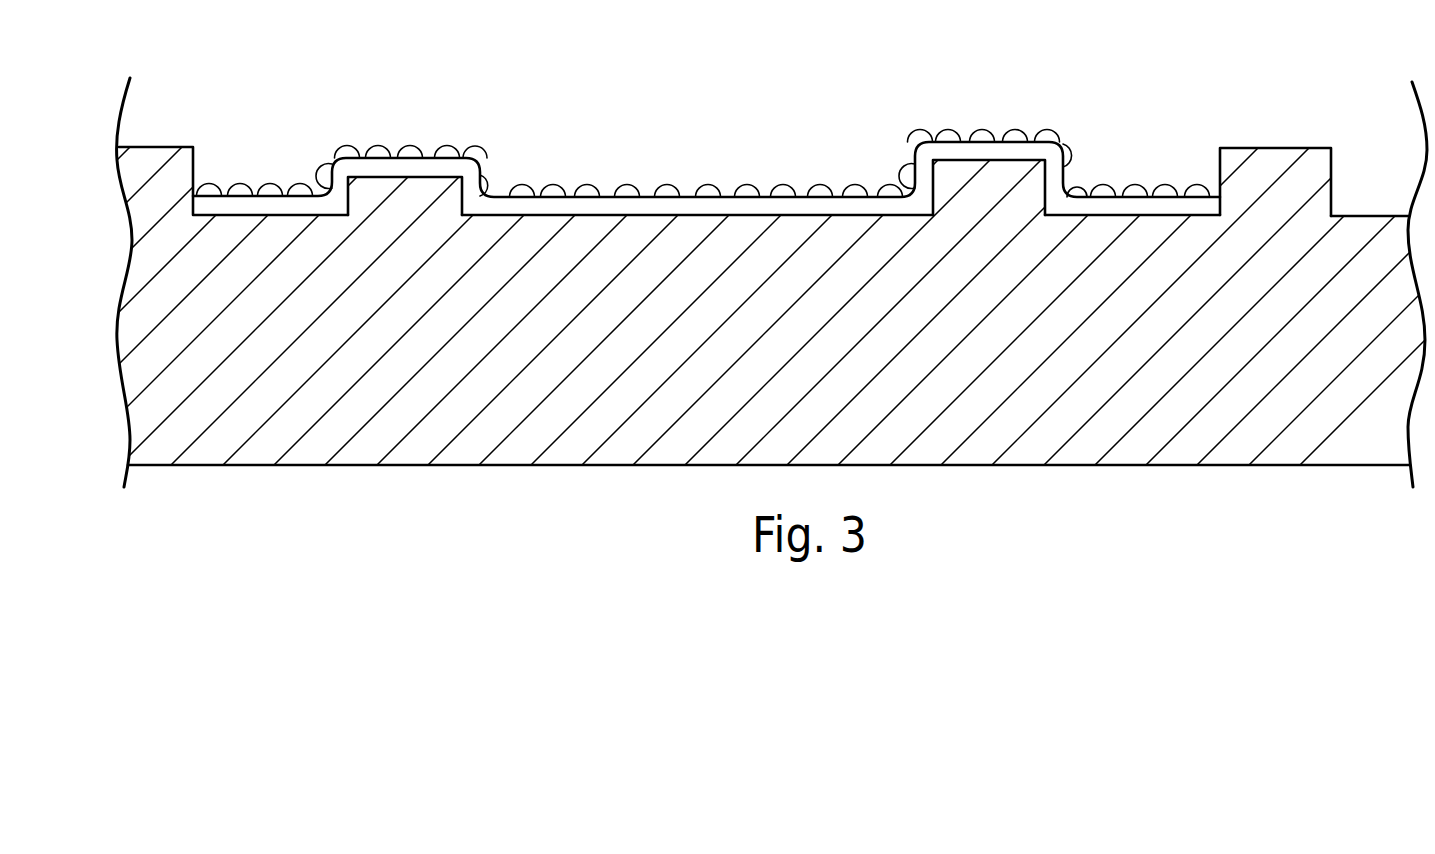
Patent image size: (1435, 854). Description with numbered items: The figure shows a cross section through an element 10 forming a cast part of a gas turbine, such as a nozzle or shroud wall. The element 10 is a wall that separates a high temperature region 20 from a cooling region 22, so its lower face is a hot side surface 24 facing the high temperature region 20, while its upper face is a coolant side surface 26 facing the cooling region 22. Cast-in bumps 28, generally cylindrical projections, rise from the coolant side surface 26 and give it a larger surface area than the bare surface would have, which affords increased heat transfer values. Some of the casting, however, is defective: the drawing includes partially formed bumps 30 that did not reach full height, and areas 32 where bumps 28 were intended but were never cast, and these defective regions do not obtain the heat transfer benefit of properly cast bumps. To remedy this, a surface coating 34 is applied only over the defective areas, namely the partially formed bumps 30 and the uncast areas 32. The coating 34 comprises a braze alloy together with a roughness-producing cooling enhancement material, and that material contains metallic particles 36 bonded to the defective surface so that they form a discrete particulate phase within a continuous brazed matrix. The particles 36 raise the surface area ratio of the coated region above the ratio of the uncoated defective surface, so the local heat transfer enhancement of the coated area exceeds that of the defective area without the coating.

The element 10 is at (717, 292).
The high temperature region 20 is at (1084, 513).
The cooling region 22 is at (706, 129).
The hot side surface 24 is at (1170, 467).
The coolant side surface 26 is at (1118, 215).
The cast-in bumps 28 is at (1270, 167).
The partially formed bumps 30 is at (423, 178).
The areas where bumps were not cast 32 is at (603, 216).
The surface coating 34 is at (811, 208).
The metallic particles 36 is at (908, 158).